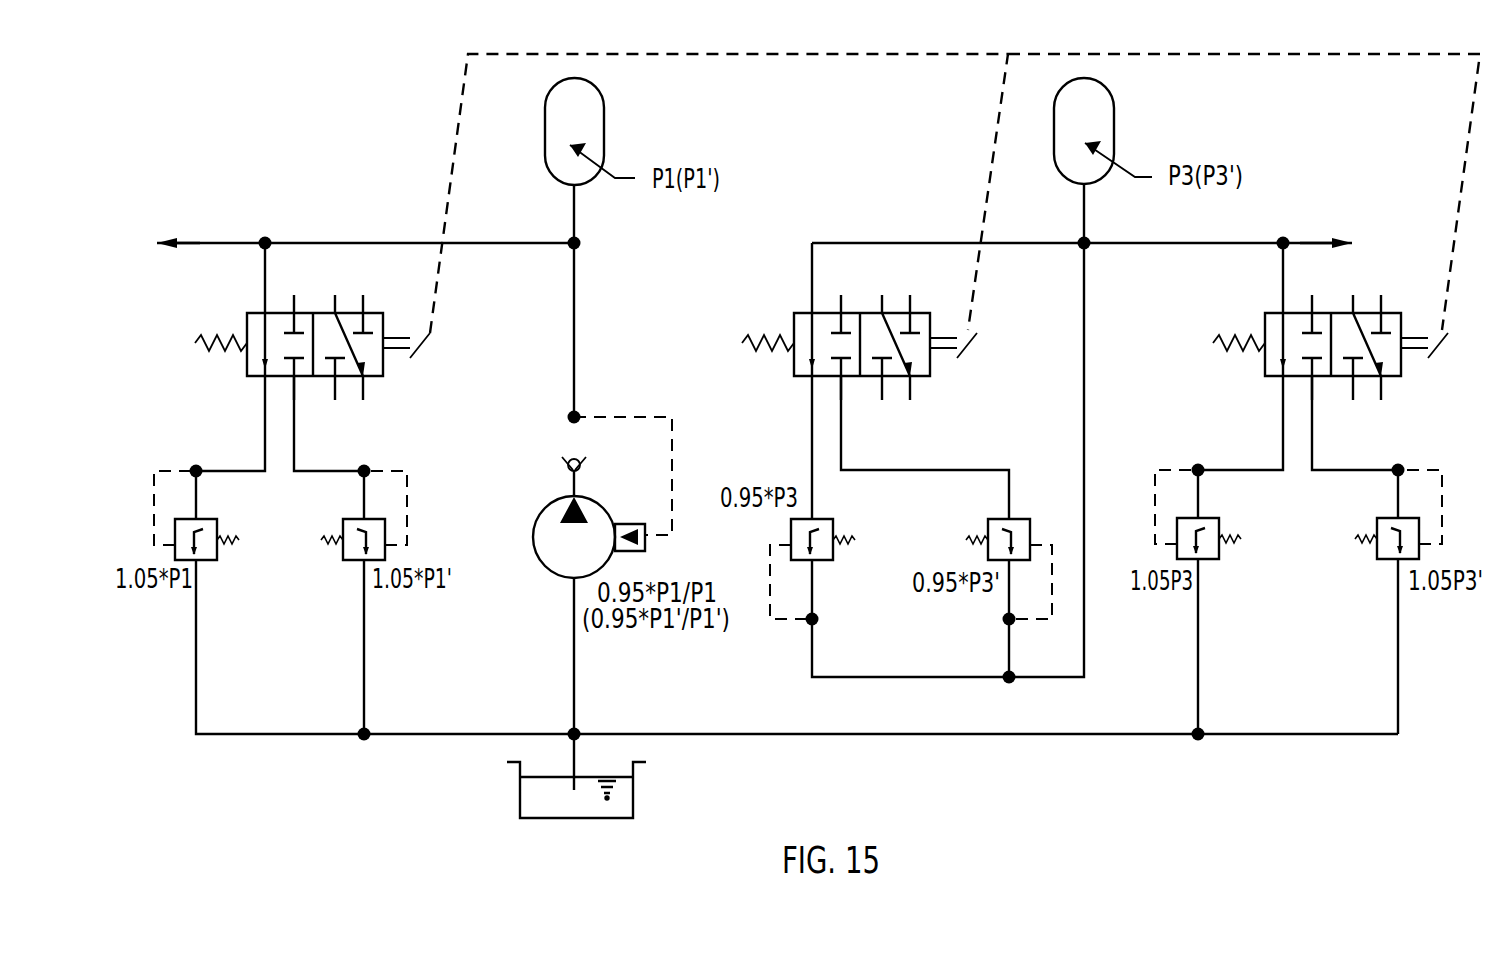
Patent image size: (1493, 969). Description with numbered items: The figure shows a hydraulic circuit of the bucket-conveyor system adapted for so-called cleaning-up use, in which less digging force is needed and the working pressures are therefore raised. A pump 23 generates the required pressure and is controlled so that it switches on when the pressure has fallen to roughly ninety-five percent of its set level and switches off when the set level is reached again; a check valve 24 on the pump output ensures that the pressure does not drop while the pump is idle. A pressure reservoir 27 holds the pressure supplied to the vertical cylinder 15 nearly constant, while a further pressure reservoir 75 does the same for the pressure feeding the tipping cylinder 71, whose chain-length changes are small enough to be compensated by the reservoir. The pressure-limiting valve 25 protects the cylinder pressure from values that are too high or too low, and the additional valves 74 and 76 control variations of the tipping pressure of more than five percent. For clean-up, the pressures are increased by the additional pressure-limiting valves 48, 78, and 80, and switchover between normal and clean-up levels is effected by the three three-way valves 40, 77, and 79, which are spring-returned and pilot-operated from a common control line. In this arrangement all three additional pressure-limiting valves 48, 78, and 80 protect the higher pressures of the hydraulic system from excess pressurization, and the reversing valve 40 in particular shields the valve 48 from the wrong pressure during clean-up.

The vertical cylinder 15 is at (173, 230).
The tipping cylinder 71 is at (1335, 227).
The pressure reservoir 27 is at (575, 103).
The pressure reservoir 75 is at (1098, 113).
The reversing valve 40 is at (312, 334).
The three-way valve 77 is at (859, 334).
The three-way valve 79 is at (1330, 334).
The pressure-limiting valve 25 is at (201, 515).
The pressure-limiting valve 48 is at (357, 515).
The valve 74 is at (815, 561).
The pressure-limiting valve 78 is at (1002, 560).
The valve 76 is at (1204, 514).
The pressure-limiting valve 80 is at (1392, 514).
The pump 23 is at (602, 497).
The check valve 24 is at (560, 452).